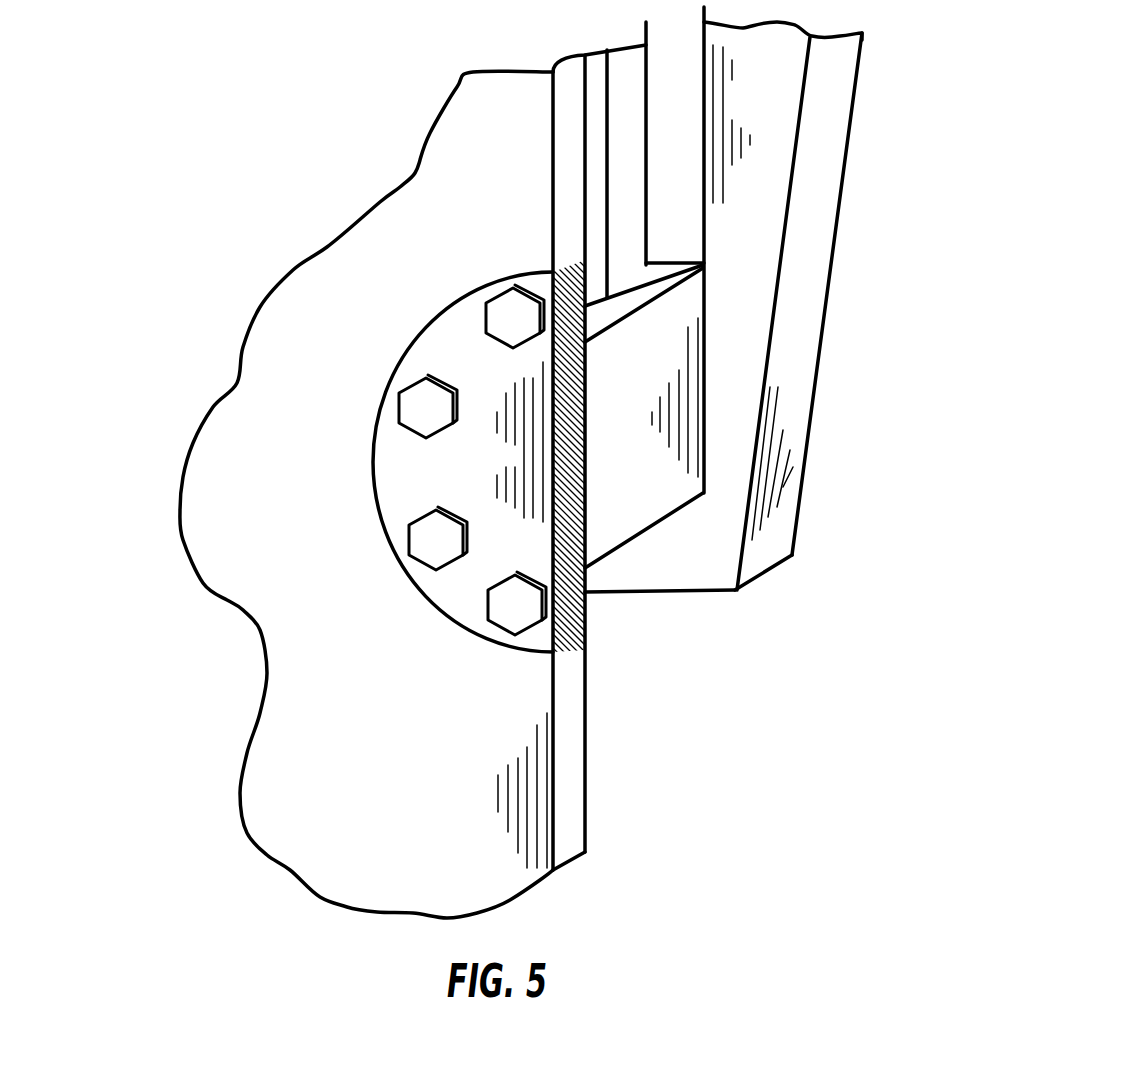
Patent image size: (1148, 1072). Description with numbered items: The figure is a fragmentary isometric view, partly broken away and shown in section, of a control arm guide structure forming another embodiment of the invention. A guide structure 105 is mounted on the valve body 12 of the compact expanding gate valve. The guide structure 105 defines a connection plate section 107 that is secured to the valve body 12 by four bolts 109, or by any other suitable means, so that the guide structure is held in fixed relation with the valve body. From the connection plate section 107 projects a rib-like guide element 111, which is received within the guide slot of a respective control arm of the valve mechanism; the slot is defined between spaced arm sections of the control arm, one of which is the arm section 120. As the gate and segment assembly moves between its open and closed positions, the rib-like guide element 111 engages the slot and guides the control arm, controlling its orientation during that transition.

The valve body 12 is at (329, 494).
The guide structure 105 is at (483, 446).
The connection plate section 107 is at (407, 462).
The bolts 109 is at (410, 405).
The rib-like guide element 111 is at (688, 339).
The arm section 120 is at (753, 280).